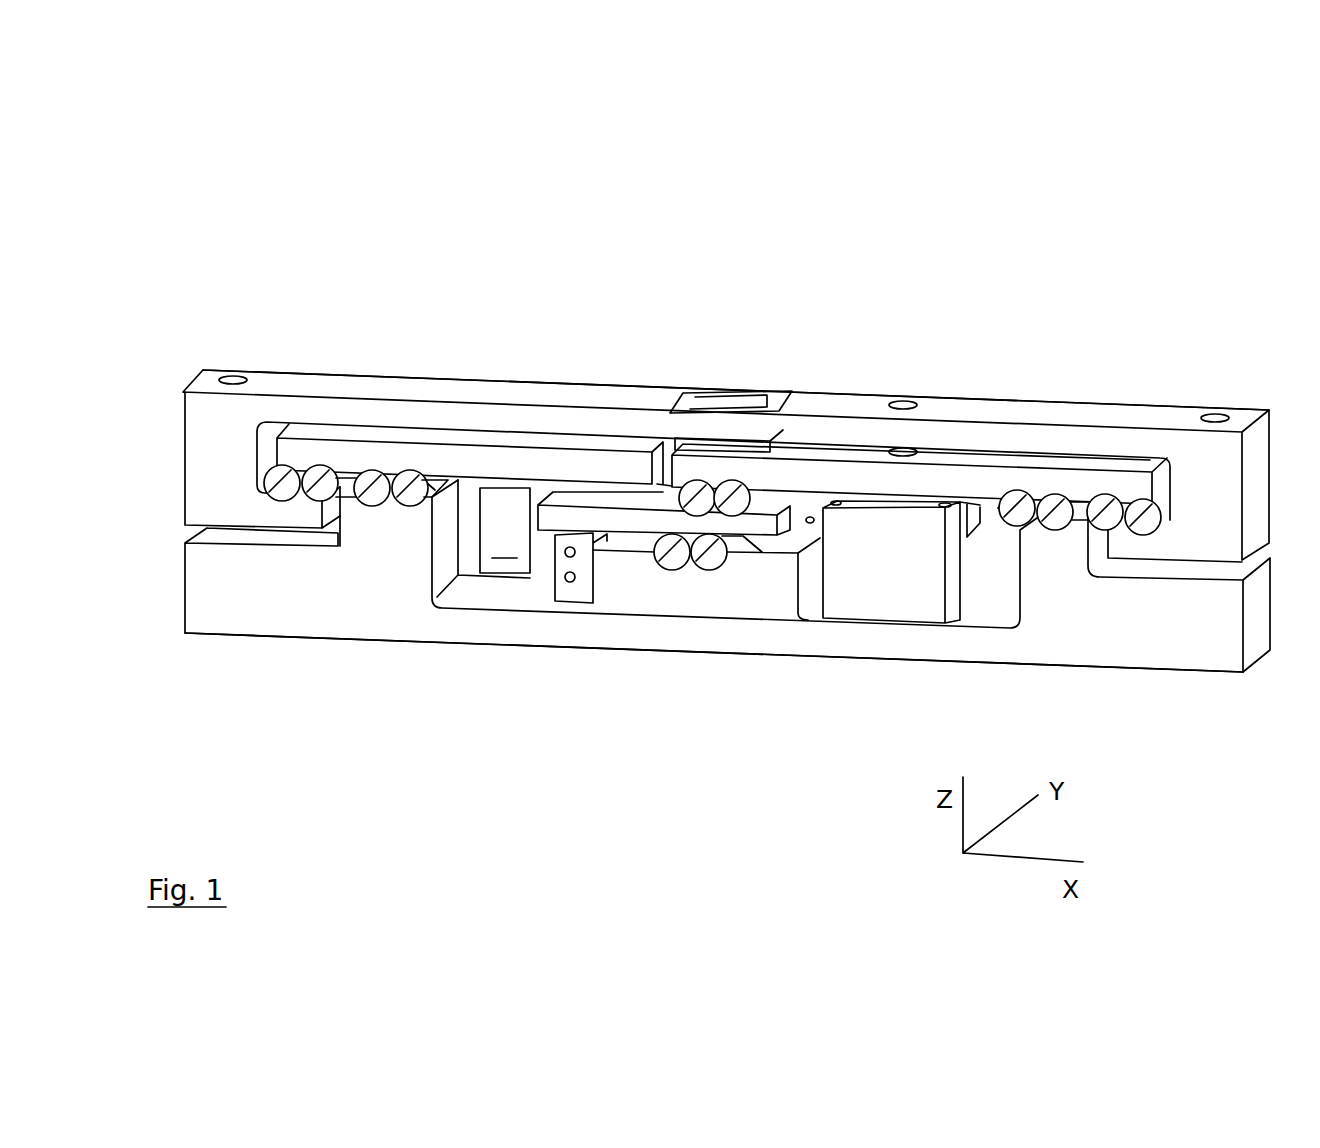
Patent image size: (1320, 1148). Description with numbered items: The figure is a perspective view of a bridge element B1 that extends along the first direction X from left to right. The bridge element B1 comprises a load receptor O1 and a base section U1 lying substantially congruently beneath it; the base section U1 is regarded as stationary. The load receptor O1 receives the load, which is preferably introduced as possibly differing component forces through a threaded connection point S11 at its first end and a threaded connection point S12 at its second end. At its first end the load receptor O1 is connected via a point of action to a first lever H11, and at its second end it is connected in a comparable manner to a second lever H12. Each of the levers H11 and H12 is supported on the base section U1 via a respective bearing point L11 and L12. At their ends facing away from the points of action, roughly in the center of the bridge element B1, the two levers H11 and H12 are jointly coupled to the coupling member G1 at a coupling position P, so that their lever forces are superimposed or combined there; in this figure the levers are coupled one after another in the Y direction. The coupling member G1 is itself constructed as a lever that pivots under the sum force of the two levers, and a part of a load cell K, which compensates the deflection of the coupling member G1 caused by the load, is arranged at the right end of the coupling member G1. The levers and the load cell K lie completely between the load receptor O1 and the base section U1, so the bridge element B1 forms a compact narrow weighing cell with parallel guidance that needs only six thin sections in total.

The bridge element B1 is at (228, 212).
The load receptor O1 is at (1028, 412).
The base section U1 is at (318, 618).
The threaded connection point S11 is at (233, 378).
The threaded connection point S12 is at (1213, 412).
The first lever H11 is at (458, 465).
The second lever H12 is at (838, 478).
The bearing point L11 is at (411, 496).
The bearing point L12 is at (1056, 516).
The coupling member G1 is at (639, 518).
The load cell K is at (902, 598).
The coupling position P is at (714, 427).